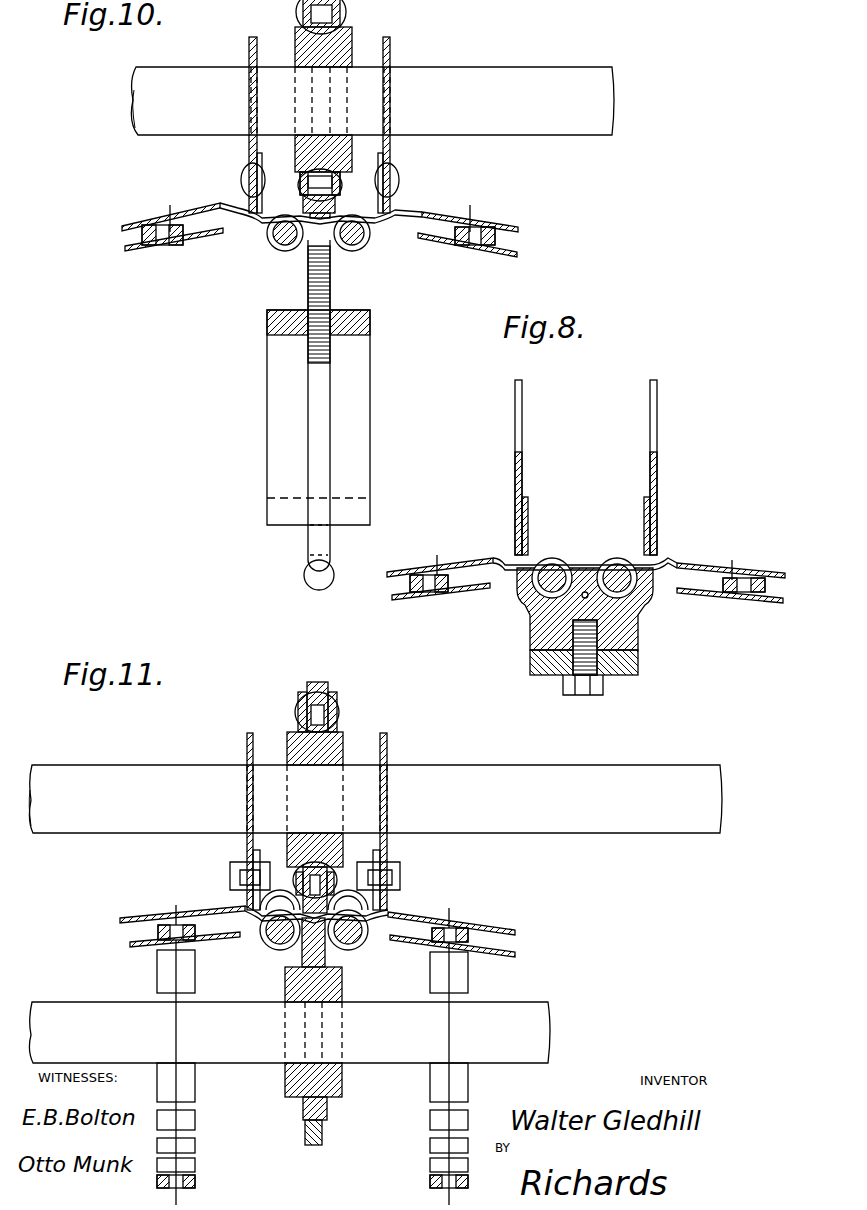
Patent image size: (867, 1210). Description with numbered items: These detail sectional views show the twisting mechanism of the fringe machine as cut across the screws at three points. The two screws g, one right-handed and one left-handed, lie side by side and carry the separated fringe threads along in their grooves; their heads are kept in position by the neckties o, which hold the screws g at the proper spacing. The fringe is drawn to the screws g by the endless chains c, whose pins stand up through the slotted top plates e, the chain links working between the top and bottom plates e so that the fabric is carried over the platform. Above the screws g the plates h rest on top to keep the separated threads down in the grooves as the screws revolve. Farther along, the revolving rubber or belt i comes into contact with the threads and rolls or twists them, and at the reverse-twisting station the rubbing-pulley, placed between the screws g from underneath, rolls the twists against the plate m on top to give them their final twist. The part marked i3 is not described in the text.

In FIG. 10, the collar nut i3 is at (348, 20).
In FIG. 11, the collar nut i3 is at (337, 712).
In FIG. 10, the revolving rubber or belt i is at (300, 190).
In FIG. 11, the revolving rubber or belt i is at (328, 688).
In FIG. 10, the plate h is at (320, 125).
In FIG. 8, the plate h is at (538, 510).
In FIG. 11, the plate h is at (247, 855).
In FIG. 10, the screw g is at (278, 245).
In FIG. 8, the screw g is at (605, 568).
In FIG. 11, the screw g is at (272, 942).
In FIG. 10, the plate e is at (125, 249).
In FIG. 8, the plate e is at (387, 574).
In FIG. 11, the plate e is at (120, 920).
In FIG. 10, the chain c is at (160, 245).
In FIG. 8, the chain c is at (437, 592).
In FIG. 11, the chain c is at (160, 948).
In FIG. 8, the necktie o is at (638, 632).
In FIG. 11, the plate m is at (314, 894).